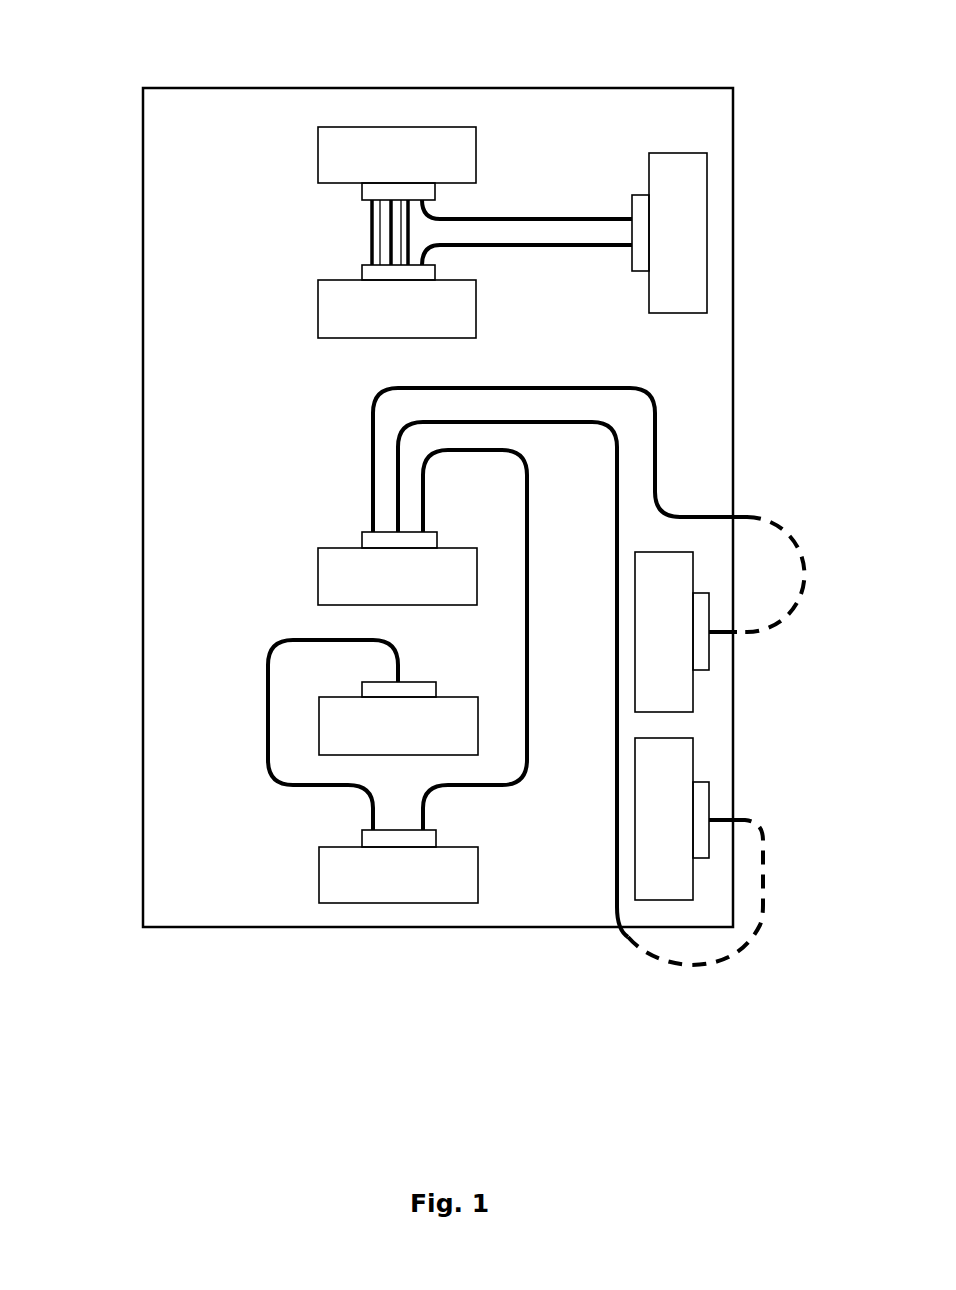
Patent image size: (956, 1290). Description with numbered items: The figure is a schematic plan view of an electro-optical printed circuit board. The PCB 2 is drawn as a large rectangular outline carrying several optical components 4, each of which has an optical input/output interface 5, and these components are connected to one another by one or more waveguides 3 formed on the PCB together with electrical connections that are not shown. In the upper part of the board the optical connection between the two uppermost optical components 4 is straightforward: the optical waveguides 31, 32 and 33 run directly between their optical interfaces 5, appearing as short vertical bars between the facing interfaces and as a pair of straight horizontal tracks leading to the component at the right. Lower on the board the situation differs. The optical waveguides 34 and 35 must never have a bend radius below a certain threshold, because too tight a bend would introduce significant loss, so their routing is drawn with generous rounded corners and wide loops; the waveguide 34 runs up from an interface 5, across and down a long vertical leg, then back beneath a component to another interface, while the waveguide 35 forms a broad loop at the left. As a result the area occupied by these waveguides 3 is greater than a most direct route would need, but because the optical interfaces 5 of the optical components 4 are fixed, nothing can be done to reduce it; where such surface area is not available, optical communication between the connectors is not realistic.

The printed circuit board 2 is at (141, 893).
The waveguide 3 is at (505, 788).
The optical waveguide 31 is at (372, 220).
The optical waveguide 32 is at (375, 206).
The optical waveguide 33 is at (432, 218).
The optical waveguide 34 is at (527, 603).
The optical waveguide 35 is at (266, 668).
The optical component 4 is at (422, 140).
The optical input/output interface 5 is at (372, 268).